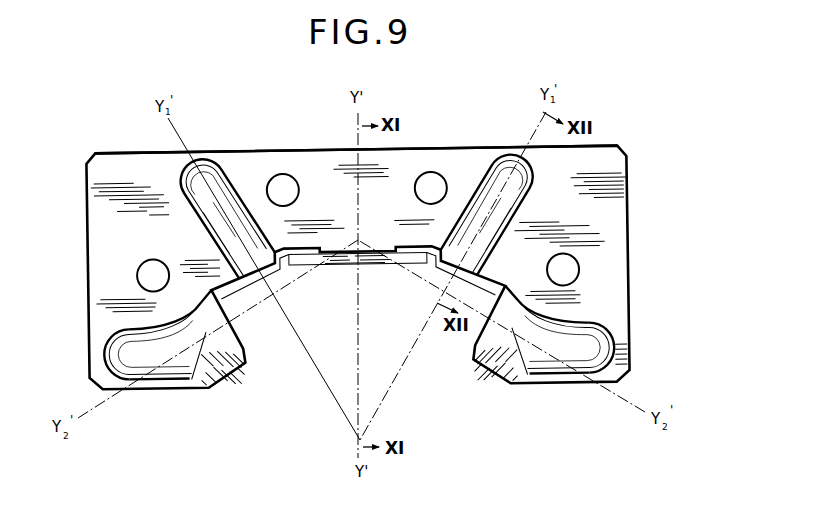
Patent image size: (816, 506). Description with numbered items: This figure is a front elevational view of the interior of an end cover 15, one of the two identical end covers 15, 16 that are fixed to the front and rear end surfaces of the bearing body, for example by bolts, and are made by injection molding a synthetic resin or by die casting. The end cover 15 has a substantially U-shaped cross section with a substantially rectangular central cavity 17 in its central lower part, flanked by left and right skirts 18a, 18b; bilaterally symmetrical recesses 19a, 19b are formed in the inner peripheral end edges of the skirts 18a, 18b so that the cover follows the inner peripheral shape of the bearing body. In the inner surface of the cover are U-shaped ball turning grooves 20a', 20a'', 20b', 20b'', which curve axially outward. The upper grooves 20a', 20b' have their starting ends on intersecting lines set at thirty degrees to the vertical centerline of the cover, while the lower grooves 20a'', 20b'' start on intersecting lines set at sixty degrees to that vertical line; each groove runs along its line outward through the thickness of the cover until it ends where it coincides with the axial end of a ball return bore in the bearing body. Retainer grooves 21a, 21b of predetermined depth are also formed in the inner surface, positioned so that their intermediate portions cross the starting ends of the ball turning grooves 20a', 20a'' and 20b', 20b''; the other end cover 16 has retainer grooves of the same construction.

The end cover 15 is at (506, 112).
The end cover 16 is at (356, 150).
The central cavity 17 is at (389, 358).
The skirt 18a is at (612, 303).
The skirt 18b is at (104, 313).
The recess 19a is at (505, 288).
The recess 19b is at (211, 290).
The upper U-shaped ball turning groove 20a' is at (535, 197).
The upper U-shaped ball turning groove 20b' is at (228, 199).
The lower U-shaped ball turning groove 20a'' is at (559, 353).
The lower U-shaped ball turning groove 20b'' is at (157, 356).
The retainer groove 21a is at (473, 343).
The retainer groove 21b is at (240, 330).